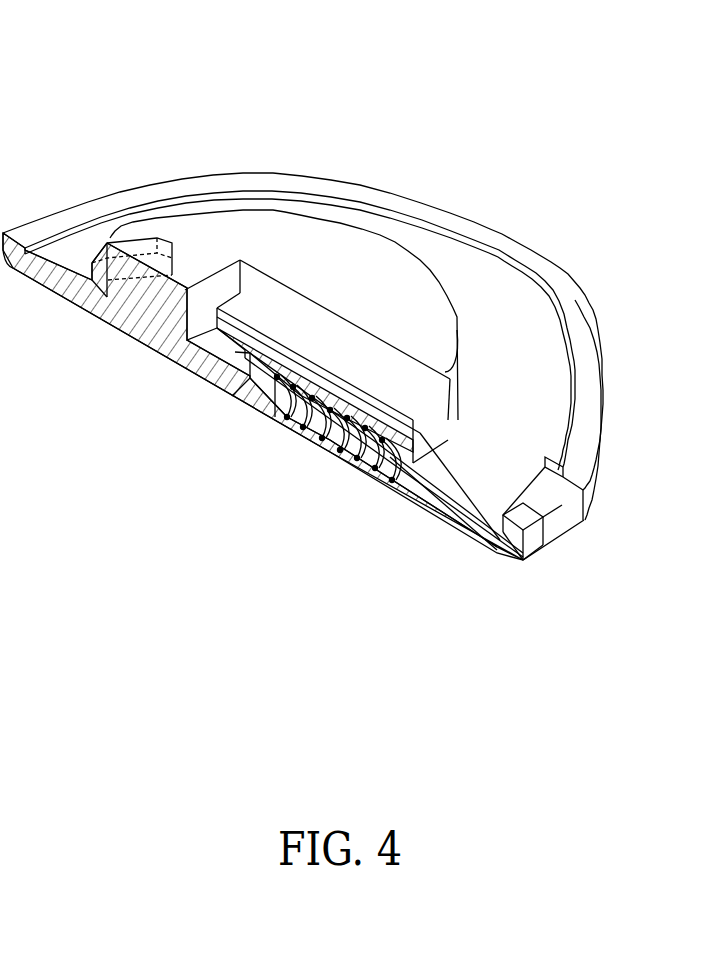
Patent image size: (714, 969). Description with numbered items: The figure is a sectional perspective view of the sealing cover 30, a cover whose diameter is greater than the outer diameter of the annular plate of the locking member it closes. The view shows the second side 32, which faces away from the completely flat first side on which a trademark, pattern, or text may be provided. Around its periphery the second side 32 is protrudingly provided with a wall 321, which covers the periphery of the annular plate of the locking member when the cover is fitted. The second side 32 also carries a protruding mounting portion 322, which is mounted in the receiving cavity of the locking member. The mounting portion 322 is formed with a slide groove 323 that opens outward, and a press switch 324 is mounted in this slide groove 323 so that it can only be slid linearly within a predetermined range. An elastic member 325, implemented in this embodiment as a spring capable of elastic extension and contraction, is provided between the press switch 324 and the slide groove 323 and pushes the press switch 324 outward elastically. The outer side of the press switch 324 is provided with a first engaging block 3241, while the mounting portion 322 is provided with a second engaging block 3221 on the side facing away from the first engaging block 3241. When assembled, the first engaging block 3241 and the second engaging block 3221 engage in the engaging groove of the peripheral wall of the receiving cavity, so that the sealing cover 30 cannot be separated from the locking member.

The sealing cover 30 is at (525, 105).
The second side 32 is at (492, 310).
The wall 321 is at (403, 204).
The mounting portion 322 is at (314, 247).
The second engaging block 3221 is at (90, 267).
The slide groove 323 is at (210, 338).
The press switch 324 is at (390, 453).
The first engaging block 3241 is at (457, 418).
The elastic member 325 is at (318, 440).